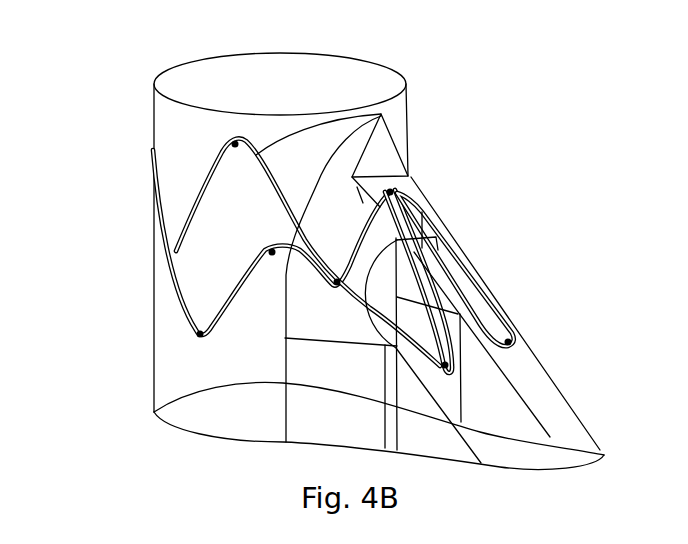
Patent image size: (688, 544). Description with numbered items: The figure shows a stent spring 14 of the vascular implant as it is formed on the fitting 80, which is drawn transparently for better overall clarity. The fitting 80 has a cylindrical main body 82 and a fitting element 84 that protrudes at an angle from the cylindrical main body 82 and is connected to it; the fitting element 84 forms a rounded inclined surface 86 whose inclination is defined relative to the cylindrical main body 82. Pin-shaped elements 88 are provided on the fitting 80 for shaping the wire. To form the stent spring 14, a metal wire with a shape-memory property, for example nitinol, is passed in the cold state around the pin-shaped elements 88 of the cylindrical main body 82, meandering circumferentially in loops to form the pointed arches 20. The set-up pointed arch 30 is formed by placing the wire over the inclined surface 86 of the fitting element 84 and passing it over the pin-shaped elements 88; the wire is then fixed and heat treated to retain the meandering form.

The fitting 80 is at (125, 99).
The stent spring 14 is at (145, 201).
The cylindrical main body 82 is at (165, 362).
The pointed arches 20 is at (265, 248).
The pin-shaped elements 88 is at (195, 331).
The set-up pointed arch 30 is at (447, 364).
The fitting element 84 is at (551, 402).
The inclined surface 86 is at (528, 373).